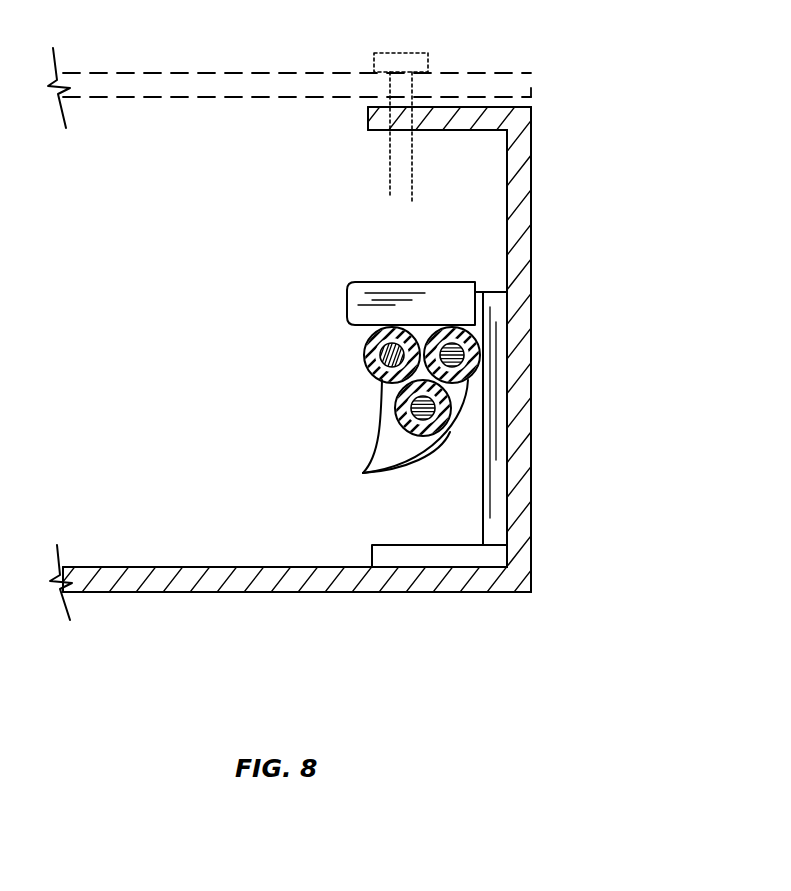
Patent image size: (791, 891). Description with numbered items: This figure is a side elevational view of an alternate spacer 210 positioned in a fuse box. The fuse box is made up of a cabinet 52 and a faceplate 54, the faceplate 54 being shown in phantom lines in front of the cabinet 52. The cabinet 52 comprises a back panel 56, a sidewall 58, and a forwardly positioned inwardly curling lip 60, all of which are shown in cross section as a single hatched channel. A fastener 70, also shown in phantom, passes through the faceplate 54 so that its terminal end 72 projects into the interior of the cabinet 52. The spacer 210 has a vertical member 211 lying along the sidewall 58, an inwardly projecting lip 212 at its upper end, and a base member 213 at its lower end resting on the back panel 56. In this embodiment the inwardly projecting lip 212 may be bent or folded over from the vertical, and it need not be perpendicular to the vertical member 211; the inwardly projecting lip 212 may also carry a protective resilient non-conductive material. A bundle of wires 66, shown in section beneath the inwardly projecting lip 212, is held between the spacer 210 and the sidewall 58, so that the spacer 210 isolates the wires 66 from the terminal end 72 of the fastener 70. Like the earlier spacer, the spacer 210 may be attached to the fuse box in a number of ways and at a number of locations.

The cabinet 52 is at (542, 513).
The faceplate 54 is at (153, 76).
The back panel 56 is at (128, 555).
The sidewall 58 is at (533, 458).
The inwardly curling lip 60 is at (485, 107).
The wires 66 is at (372, 472).
The fastener 70 is at (420, 53).
The terminal end 72 is at (402, 200).
The spacer 210 is at (436, 394).
The vertical member 211 is at (500, 383).
The inwardly projecting lip 212 is at (358, 298).
The base member 213 is at (407, 555).